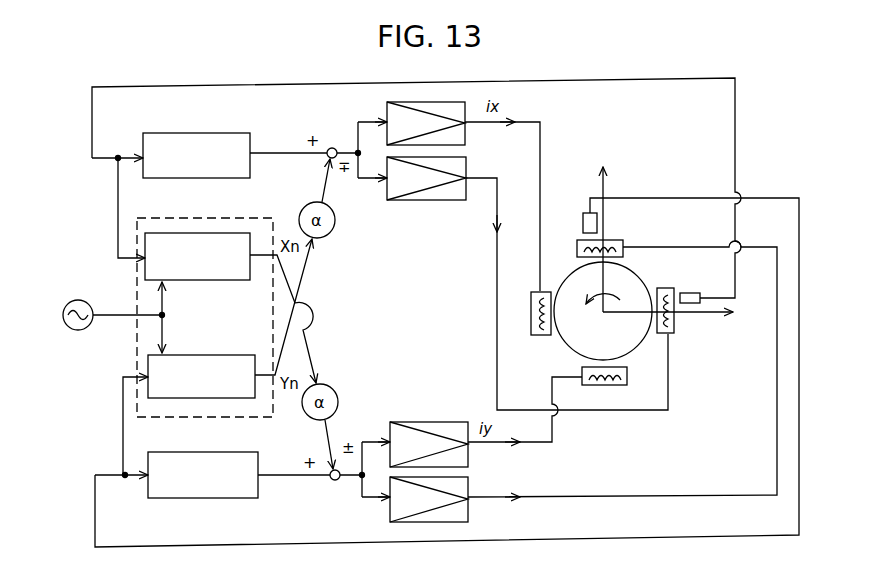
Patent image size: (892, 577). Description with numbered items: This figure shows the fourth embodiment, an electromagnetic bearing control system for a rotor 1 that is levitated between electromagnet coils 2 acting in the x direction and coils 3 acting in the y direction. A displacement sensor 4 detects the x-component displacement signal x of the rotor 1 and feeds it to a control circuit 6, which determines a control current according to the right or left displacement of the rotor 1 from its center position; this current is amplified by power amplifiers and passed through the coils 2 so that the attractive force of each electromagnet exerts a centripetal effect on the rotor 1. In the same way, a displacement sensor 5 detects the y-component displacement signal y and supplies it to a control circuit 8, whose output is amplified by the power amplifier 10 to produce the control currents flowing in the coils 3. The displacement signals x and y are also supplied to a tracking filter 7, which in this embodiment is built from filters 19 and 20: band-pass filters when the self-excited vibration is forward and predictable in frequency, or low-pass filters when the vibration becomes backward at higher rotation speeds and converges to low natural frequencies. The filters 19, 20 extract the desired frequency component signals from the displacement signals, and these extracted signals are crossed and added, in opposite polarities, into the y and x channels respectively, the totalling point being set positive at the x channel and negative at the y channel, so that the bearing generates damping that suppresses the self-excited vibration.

The rotor 1 is at (633, 266).
The coils 2 is at (538, 336).
The coils 3 is at (623, 243).
The displacement sensor 4 is at (690, 293).
The displacement sensor 5 is at (385, 113).
The control circuit 6 is at (215, 133).
The tracking filter 7 is at (255, 218).
The control circuit 8 is at (75, 300).
The power amplifier 10 is at (428, 422).
The band-pass filter 19 is at (200, 281).
The band-pass filter 20 is at (184, 355).